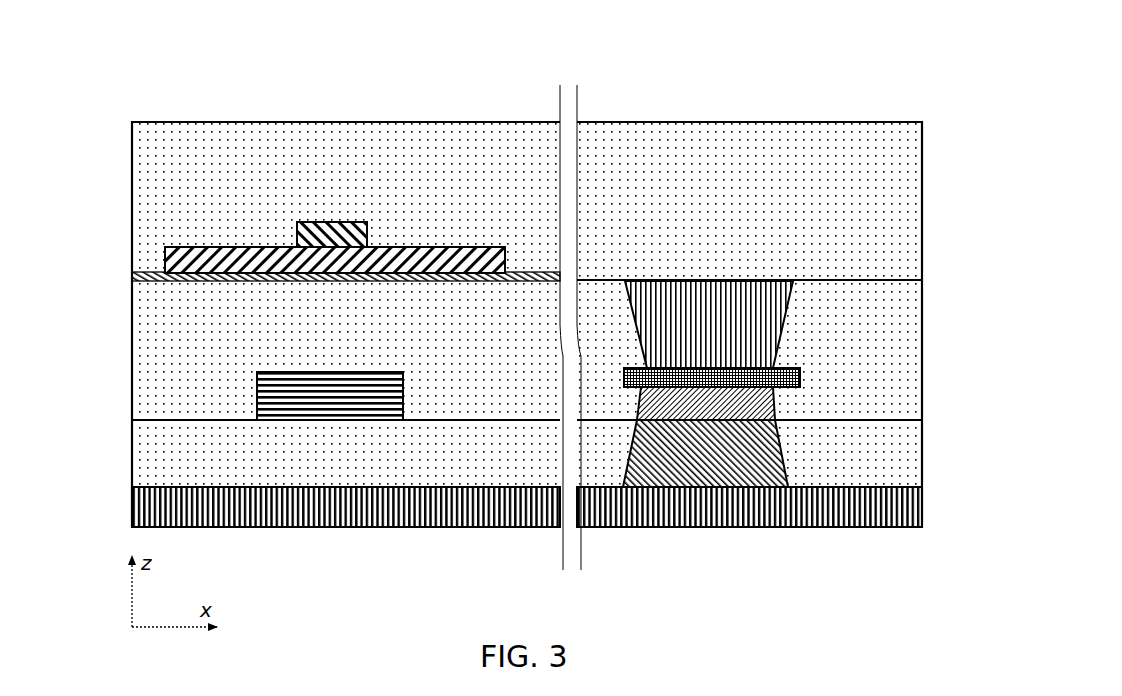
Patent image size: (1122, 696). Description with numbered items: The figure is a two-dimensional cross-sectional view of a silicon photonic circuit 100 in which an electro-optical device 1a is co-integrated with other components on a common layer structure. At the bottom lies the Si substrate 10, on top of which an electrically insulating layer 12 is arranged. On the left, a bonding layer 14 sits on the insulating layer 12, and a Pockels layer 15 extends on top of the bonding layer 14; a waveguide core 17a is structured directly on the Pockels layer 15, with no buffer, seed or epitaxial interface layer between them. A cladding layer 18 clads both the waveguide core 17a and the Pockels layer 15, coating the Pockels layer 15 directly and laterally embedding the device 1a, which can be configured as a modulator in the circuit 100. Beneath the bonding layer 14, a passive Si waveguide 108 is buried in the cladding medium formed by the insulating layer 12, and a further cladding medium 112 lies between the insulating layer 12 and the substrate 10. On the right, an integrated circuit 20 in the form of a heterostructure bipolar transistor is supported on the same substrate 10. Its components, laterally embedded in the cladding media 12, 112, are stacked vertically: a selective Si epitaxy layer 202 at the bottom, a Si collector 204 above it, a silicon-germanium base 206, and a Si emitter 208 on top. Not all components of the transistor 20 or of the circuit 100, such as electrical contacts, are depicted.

The silicon photonic circuit 100 is at (540, 313).
The electro-optical device 1a is at (292, 226).
The substrate 10 is at (400, 527).
The electrically insulating layer 12 is at (903, 342).
The bonding layer 14 is at (133, 280).
The Pockels layer 15 is at (413, 247).
The waveguide core 17a is at (327, 221).
The cladding layer 18 is at (912, 143).
The integrated circuit 20 is at (748, 337).
The passive Si waveguide 108 is at (257, 371).
The cladding medium 112 is at (908, 457).
The selective Si epitaxy layer 202 is at (745, 455).
The Si collector 204 is at (777, 405).
The silicon-germanium base 206 is at (780, 377).
The Si emitter 208 is at (768, 310).